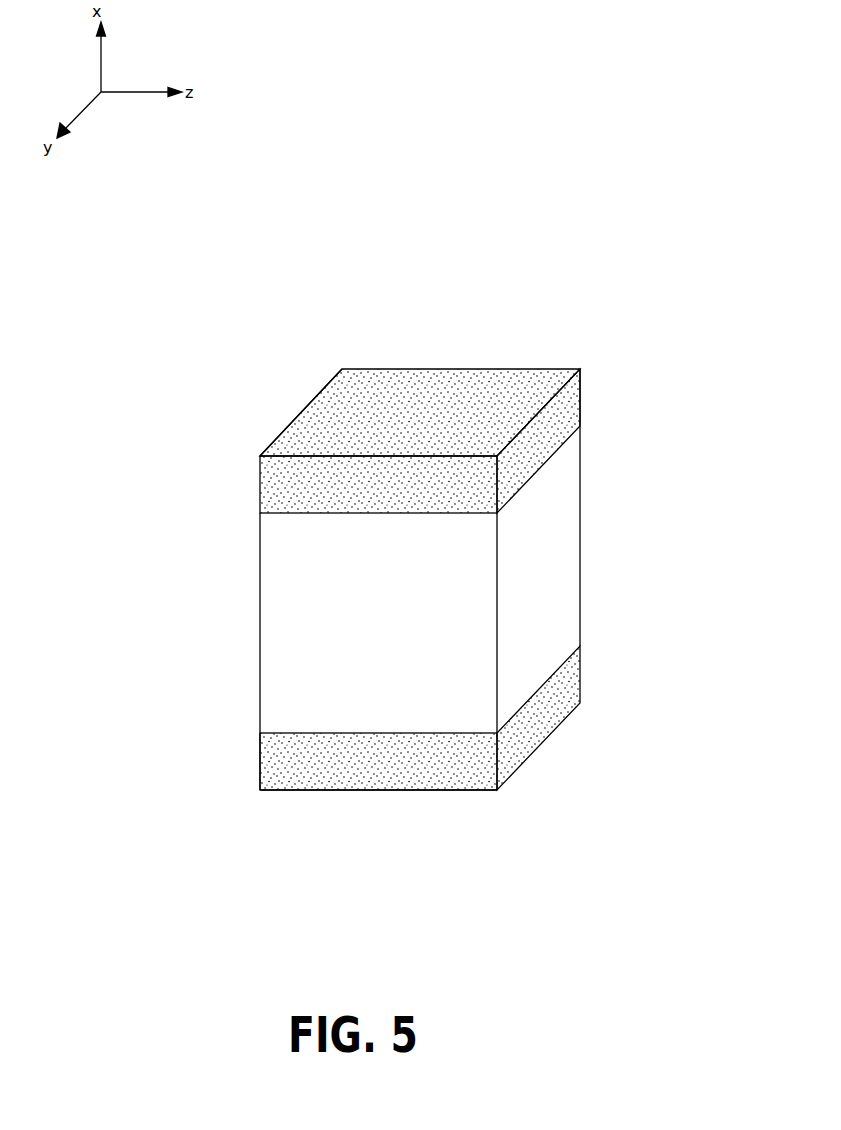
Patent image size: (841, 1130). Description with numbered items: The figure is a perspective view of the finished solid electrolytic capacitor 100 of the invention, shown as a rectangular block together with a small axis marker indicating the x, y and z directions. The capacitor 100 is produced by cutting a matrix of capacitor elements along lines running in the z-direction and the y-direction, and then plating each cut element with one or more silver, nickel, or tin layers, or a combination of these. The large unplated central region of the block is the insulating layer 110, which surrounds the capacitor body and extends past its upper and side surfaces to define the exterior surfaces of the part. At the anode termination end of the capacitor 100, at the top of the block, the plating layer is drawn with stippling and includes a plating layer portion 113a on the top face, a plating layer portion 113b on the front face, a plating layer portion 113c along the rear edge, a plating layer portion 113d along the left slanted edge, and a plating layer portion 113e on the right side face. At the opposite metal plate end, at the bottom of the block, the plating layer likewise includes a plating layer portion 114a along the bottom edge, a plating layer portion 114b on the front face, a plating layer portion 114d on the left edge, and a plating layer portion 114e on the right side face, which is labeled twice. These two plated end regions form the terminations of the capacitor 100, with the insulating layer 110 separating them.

The solid electrolytic capacitor 100 is at (276, 281).
The insulating layer 110 is at (557, 558).
The plating layer portion 113a is at (420, 400).
The plating layer portion 113b is at (287, 485).
The plating layer portion 113c is at (582, 398).
The plating layer portion 113d is at (305, 408).
The plating layer portion 113e is at (552, 418).
The plating layer portion 114a is at (463, 792).
The plating layer portion 114b is at (362, 768).
The plating layer portion 114d is at (262, 759).
The plating layer portion 114e is at (582, 687).